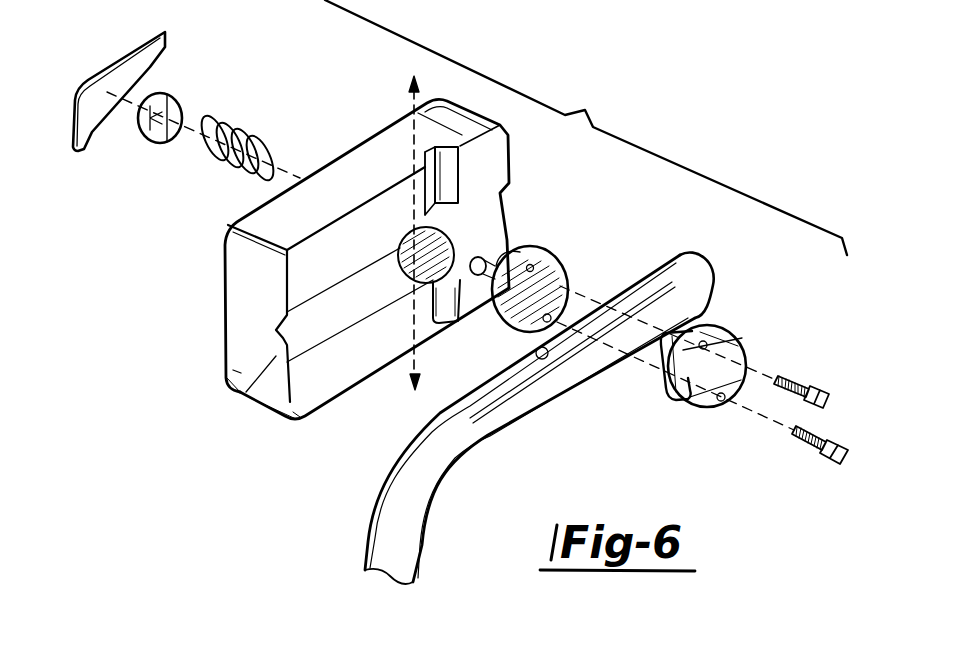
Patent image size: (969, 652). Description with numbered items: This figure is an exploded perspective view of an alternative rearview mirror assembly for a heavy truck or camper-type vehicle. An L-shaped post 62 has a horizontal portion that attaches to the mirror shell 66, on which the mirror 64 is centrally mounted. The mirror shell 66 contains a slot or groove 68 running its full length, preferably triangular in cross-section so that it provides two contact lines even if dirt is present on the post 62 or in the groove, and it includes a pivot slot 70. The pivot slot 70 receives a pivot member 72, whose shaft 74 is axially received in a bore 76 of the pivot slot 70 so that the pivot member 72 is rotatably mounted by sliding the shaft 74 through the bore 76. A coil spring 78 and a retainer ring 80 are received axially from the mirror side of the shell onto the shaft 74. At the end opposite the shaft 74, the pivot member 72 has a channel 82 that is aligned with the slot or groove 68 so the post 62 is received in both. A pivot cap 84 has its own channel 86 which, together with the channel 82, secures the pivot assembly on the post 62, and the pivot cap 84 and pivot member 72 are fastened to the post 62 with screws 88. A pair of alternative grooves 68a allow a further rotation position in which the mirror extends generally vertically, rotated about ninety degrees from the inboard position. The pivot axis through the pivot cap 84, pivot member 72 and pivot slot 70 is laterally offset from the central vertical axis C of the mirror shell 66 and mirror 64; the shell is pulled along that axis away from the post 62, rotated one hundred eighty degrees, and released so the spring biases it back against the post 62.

The L-shaped post 62 is at (407, 516).
The mirror 64 is at (93, 130).
The mirror shell 66 is at (268, 398).
The slot or groove 68 is at (236, 396).
The alternative grooves 68a is at (450, 163).
The pivot slot 70 is at (500, 226).
The pivot member 72 is at (512, 258).
The shaft 74 is at (473, 298).
The bore 76 is at (478, 198).
The coil spring 78 is at (227, 120).
The retainer ring 80 is at (178, 100).
The channel 82 is at (548, 262).
The pivot cap 84 is at (747, 343).
The channel 86 is at (666, 383).
The screws 88 is at (845, 452).
The central vertical axis C is at (452, 100).